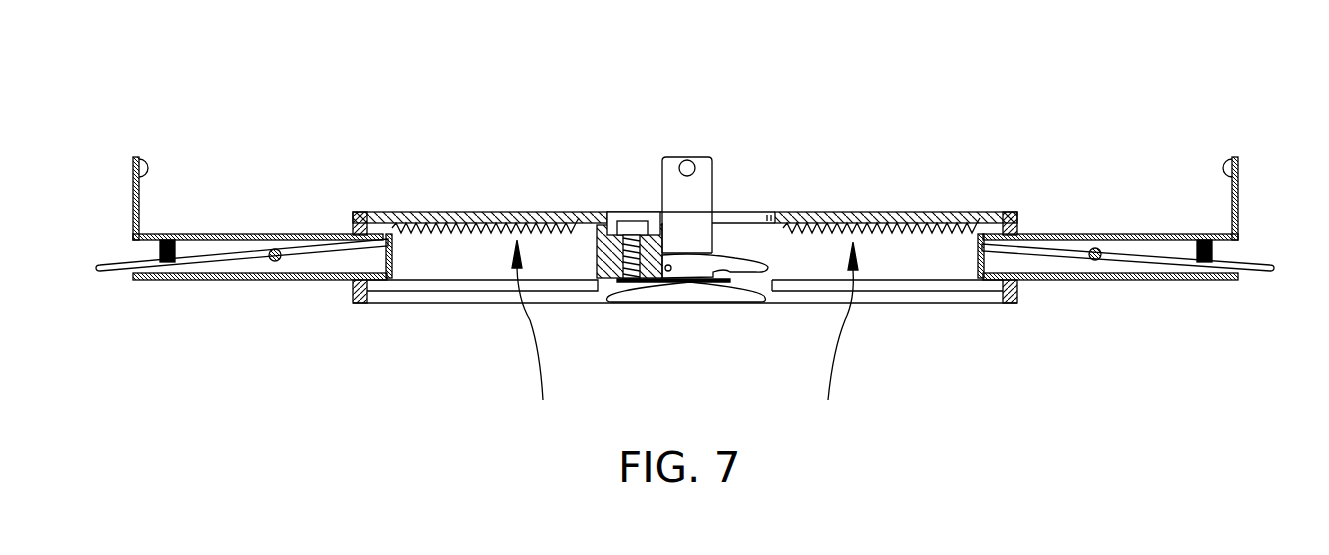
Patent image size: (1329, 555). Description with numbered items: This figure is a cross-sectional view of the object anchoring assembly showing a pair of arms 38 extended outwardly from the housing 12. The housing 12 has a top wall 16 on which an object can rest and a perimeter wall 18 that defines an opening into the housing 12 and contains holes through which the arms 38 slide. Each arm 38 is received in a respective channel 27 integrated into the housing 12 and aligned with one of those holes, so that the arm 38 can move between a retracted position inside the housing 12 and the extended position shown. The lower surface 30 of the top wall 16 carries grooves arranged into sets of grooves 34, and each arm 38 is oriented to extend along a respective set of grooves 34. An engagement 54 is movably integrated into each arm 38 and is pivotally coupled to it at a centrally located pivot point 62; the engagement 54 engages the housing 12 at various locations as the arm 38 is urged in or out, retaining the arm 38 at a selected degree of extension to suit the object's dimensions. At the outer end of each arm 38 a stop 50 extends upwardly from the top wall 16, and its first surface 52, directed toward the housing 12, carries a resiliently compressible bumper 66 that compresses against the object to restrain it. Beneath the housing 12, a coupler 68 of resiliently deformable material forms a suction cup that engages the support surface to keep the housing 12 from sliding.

The housing 12 is at (1015, 210).
The top wall 16 is at (892, 211).
The perimeter wall 18 is at (353, 224).
The channels 27 is at (478, 291).
The lower surface 30 is at (765, 243).
The sets of grooves 34 is at (685, 341).
The arms 38 is at (222, 281).
The stop 50 is at (132, 192).
The first surface 52 is at (1232, 207).
The engagements 54 is at (312, 257).
The pivot point 62 is at (1098, 240).
The bumpers 66 is at (147, 163).
The coupler 68 is at (693, 303).